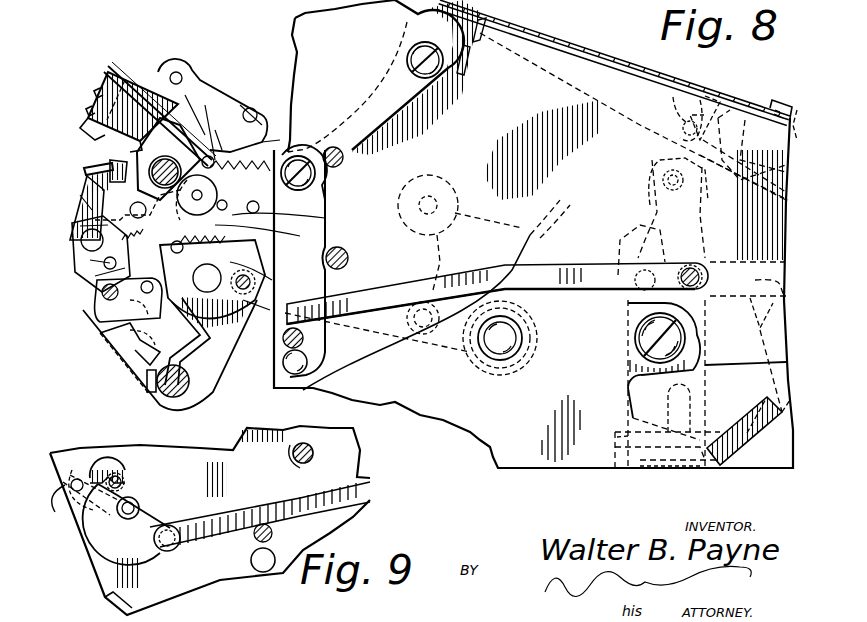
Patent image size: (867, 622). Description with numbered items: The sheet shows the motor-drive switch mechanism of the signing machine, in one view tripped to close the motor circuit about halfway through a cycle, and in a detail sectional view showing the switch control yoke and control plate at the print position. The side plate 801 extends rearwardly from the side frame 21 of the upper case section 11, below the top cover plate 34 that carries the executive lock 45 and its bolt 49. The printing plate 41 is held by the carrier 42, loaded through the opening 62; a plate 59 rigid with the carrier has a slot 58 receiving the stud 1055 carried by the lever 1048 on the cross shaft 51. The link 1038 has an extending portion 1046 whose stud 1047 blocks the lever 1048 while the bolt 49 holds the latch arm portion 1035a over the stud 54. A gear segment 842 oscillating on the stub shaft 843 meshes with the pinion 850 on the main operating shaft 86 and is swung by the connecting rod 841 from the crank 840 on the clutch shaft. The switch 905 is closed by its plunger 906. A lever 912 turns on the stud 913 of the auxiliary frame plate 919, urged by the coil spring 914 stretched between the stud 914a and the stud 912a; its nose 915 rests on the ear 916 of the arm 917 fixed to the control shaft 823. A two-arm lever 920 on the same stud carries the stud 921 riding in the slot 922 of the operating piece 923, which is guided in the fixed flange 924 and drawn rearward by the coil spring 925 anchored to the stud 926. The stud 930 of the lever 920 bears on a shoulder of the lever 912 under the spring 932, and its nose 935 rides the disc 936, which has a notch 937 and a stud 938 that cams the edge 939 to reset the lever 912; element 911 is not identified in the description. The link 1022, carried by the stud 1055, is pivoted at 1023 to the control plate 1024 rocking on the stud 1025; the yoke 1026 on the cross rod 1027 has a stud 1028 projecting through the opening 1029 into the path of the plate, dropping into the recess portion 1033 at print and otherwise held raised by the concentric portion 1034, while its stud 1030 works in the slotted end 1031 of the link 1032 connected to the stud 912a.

In FIG. 8, the side plate 801 is at (533, 234).
In FIG. 9, the side plate 801 is at (210, 520).
In FIG. 8, the upper case section 11 is at (548, 38).
In FIG. 8, the side frame 21 is at (580, 72).
In FIG. 9, the side frame 21 is at (350, 447).
In FIG. 8, the top cover plate 34 is at (722, 100).
In FIG. 8, the executive lock 45 is at (782, 103).
In FIG. 8, the bolt 49 is at (799, 116).
In FIG. 8, the stud 54 is at (670, 120).
In FIG. 8, the cross shaft 51 is at (672, 175).
In FIG. 8, the slot 58 is at (690, 260).
In FIG. 8, the plate 59 is at (766, 355).
In FIG. 8, the opening 62 is at (755, 430).
In FIG. 8, the printing plate 41 is at (655, 462).
In FIG. 8, the printing plate carrier 42 is at (617, 437).
In FIG. 8, the main operating shaft 86 is at (524, 342).
In FIG. 8, the control shaft 823 is at (88, 240).
In FIG. 8, the crank 840 is at (213, 313).
In FIG. 8, the connecting rod 841 is at (263, 303).
In FIG. 8, the gear segment 842 is at (540, 225).
In FIG. 8, the stub shaft 843 is at (432, 198).
In FIG. 8, the pinion 850 is at (500, 376).
In FIG. 8, the switch 905 is at (108, 78).
In FIG. 8, the plunger 906 is at (148, 65).
In FIG. 8, the disc 911 is at (215, 244).
In FIG. 8, the lever 912 is at (88, 205).
In FIG. 8, the stud 912a is at (80, 195).
In FIG. 8, the stud 913 is at (195, 195).
In FIG. 8, the coil spring 914 is at (80, 226).
In FIG. 8, the stud 914a is at (90, 260).
In FIG. 8, the nose 915 is at (138, 190).
In FIG. 8, the ear 916 is at (108, 163).
In FIG. 8, the arm 917 is at (84, 170).
In FIG. 8, the auxiliary frame plate 919 is at (255, 110).
In FIG. 8, the two-arm lever 920 is at (322, 178).
In FIG. 8, the stud 921 is at (215, 100).
In FIG. 8, the slot 922 is at (232, 150).
In FIG. 8, the switch plunger operating piece 923 is at (195, 90).
In FIG. 8, the fixed flange 924 is at (165, 60).
In FIG. 8, the coil spring 925 is at (222, 130).
In FIG. 8, the stud 926 is at (262, 130).
In FIG. 8, the stud 930 is at (303, 177).
In FIG. 8, the spring 932 is at (255, 228).
In FIG. 8, the nose 935 is at (245, 210).
In FIG. 8, the disc 936 is at (240, 315).
In FIG. 8, the notch 937 is at (135, 372).
In FIG. 8, the stud 938 is at (278, 283).
In FIG. 8, the edge 939 is at (322, 248).
In FIG. 8, the link 1022 is at (573, 264).
In FIG. 9, the link 1022 is at (250, 503).
In FIG. 9, the pivot 1023 is at (180, 548).
In FIG. 9, the control plate 1024 is at (140, 555).
In FIG. 9, the stud 1025 is at (125, 512).
In FIG. 8, the yoke member 1026 is at (110, 310).
In FIG. 9, the yoke member 1026 is at (58, 492).
In FIG. 8, the cross rod 1027 is at (100, 300).
In FIG. 9, the cross rod 1027 is at (77, 476).
In FIG. 8, the stud 1028 is at (97, 290).
In FIG. 9, the stud 1028 is at (128, 455).
In FIG. 9, the opening 1029 is at (125, 443).
In FIG. 8, the stud 1030 is at (100, 345).
In FIG. 8, the slotted end 1031 is at (120, 355).
In FIG. 8, the link 1032 is at (95, 276).
In FIG. 9, the recess portion 1033 is at (120, 480).
In FIG. 9, the concentric portion 1034 is at (100, 500).
In FIG. 8, the latch arm portion 1035a is at (708, 92).
In FIG. 8, the link 1038 is at (683, 385).
In FIG. 8, the extending portion 1046 is at (660, 215).
In FIG. 8, the stud 1047 is at (640, 235).
In FIG. 8, the lever 1048 is at (700, 188).
In FIG. 8, the stud 1055 is at (705, 272).